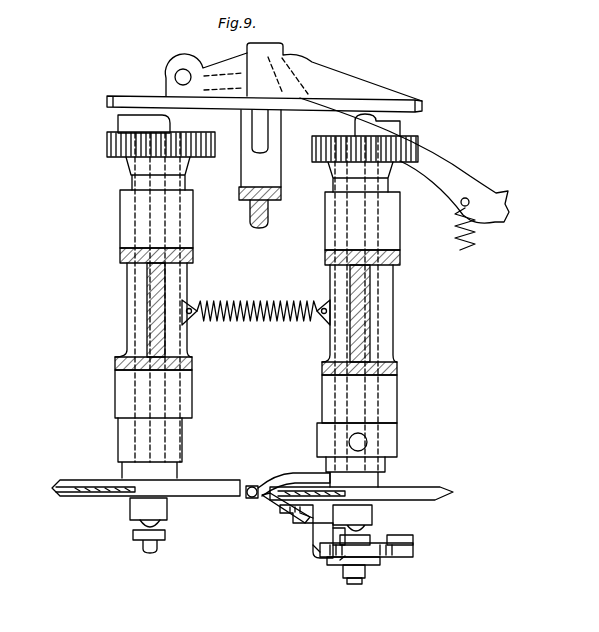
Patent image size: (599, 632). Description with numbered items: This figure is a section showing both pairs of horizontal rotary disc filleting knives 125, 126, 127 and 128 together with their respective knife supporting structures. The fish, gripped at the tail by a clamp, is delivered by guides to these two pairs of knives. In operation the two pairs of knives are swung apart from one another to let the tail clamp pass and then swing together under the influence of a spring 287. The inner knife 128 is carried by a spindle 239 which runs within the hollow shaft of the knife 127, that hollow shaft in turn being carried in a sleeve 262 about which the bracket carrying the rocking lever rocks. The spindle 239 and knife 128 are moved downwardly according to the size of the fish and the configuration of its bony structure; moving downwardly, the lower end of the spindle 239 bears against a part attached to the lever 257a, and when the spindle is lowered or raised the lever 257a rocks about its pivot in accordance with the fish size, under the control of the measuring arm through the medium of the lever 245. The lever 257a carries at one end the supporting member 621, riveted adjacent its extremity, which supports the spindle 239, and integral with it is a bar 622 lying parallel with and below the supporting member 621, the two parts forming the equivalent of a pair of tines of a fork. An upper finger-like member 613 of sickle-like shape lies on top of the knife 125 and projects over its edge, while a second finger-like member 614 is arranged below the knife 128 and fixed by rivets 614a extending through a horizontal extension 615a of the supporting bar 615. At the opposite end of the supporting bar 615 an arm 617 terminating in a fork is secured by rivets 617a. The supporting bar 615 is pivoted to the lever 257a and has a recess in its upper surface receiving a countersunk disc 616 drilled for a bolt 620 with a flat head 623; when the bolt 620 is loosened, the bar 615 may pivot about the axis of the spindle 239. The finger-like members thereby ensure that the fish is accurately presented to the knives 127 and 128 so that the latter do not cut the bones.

The lever 245 is at (296, 93).
The spring 287 is at (268, 318).
The sleeve 262 is at (394, 400).
The horizontal rotary disc knife 125 is at (80, 479).
The horizontal rotary disc knife 126 is at (86, 495).
The horizontal rotary disc knife 127 is at (424, 490).
The horizontal rotary disc knife 128 is at (415, 506).
The finger-like member 613 is at (261, 487).
The finger-like member 614 is at (266, 501).
The rivets 614a is at (310, 527).
The supporting bar 615 is at (308, 534).
The horizontal extension 615a is at (300, 516).
The spindle 239 is at (320, 540).
The supporting member 621 is at (318, 553).
The disc 616 is at (328, 567).
The bolt 620 is at (344, 572).
The flat head 623 is at (352, 580).
The bar 622 is at (375, 568).
The lever 257a is at (383, 565).
The arm 617 is at (410, 539).
The rivets 617a is at (410, 552).